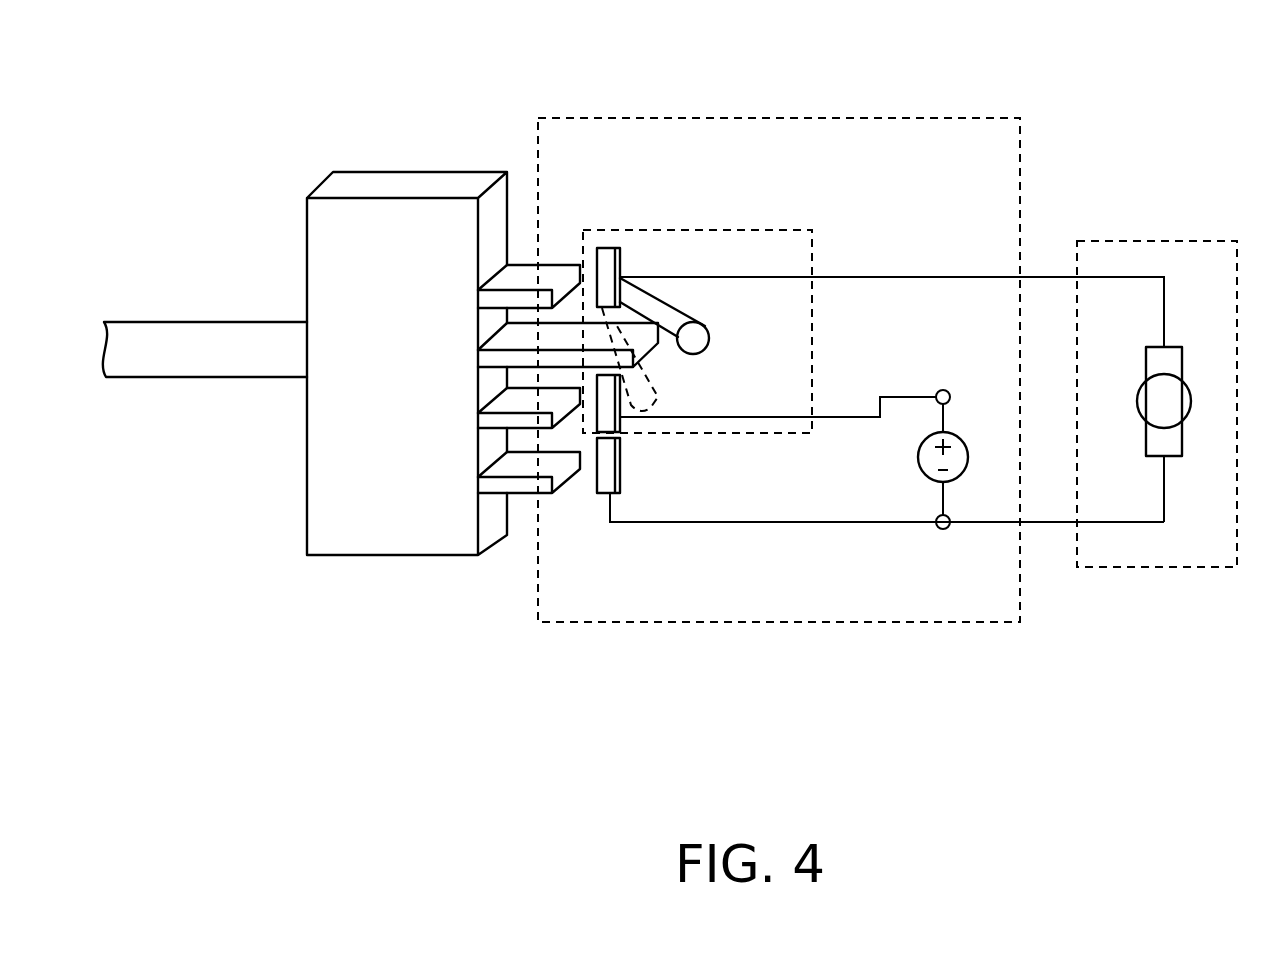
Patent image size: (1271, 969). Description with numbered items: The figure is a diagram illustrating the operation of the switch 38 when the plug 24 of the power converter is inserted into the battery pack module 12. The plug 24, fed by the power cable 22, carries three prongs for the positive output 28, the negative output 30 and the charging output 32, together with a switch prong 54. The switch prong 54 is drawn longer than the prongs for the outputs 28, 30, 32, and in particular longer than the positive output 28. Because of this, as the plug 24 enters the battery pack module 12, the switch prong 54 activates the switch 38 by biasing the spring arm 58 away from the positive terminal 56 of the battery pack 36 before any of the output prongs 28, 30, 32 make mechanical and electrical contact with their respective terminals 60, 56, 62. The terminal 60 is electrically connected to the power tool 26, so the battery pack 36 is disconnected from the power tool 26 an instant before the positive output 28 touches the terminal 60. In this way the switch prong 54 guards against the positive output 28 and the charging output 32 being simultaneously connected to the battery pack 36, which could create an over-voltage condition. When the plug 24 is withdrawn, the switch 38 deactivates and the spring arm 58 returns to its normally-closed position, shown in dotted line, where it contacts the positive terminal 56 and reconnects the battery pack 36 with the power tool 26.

The battery pack module 12 is at (742, 118).
The power cable 22 is at (204, 336).
The plug 24 is at (407, 220).
The power tool 26 is at (1155, 241).
The positive output 28 is at (555, 263).
The negative output 30 is at (545, 485).
The charging output 32 is at (503, 423).
The battery pack 36 is at (961, 438).
The switch 38 is at (812, 309).
The switch prong 54 is at (512, 336).
The positive terminal 56 is at (613, 420).
The spring arm 58 is at (690, 312).
The terminal 60 is at (601, 248).
The terminal 62 is at (603, 484).